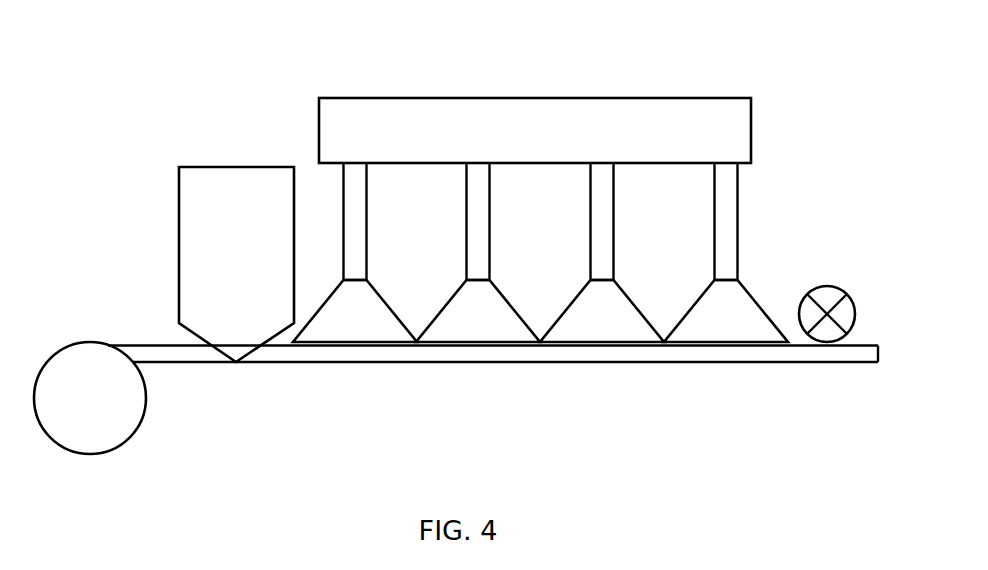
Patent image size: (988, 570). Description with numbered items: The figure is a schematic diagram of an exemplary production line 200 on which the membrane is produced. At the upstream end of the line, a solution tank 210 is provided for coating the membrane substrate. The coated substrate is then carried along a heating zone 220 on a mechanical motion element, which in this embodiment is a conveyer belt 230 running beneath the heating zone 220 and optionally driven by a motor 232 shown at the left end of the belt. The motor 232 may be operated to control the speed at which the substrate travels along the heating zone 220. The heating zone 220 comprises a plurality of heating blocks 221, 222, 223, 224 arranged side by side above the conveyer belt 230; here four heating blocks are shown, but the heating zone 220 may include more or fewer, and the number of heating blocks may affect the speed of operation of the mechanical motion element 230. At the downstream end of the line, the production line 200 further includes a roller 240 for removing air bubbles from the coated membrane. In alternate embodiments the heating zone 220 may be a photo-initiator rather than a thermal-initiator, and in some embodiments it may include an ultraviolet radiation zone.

The production line 200 is at (178, 96).
The solution tank 210 is at (236, 264).
The heating zone 220 is at (535, 130).
The heating block 221 is at (355, 252).
The heating block 222 is at (478, 252).
The heating block 223 is at (602, 252).
The heating block 224 is at (726, 252).
The conveyer belt 230 is at (788, 364).
The motor 232 is at (90, 398).
The roller 240 is at (845, 292).